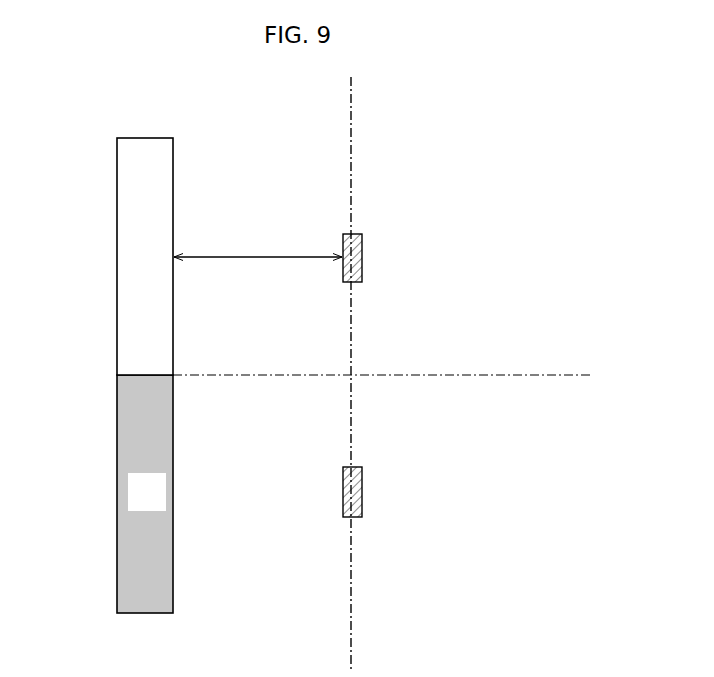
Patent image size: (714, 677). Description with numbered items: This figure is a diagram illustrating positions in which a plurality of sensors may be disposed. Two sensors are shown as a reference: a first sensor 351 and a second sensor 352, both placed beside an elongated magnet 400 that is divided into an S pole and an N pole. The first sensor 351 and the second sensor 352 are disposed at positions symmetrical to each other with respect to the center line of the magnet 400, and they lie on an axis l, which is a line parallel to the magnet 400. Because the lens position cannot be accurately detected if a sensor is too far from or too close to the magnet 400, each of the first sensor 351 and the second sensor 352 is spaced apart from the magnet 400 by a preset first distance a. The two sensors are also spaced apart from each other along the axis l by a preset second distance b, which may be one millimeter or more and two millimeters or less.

The magnet 400 is at (117, 598).
The first sensor 351 is at (362, 500).
The second sensor 352 is at (362, 258).
The axis l is at (351, 135).
The preset first distance a is at (173, 257).
The distance b is at (348, 467).